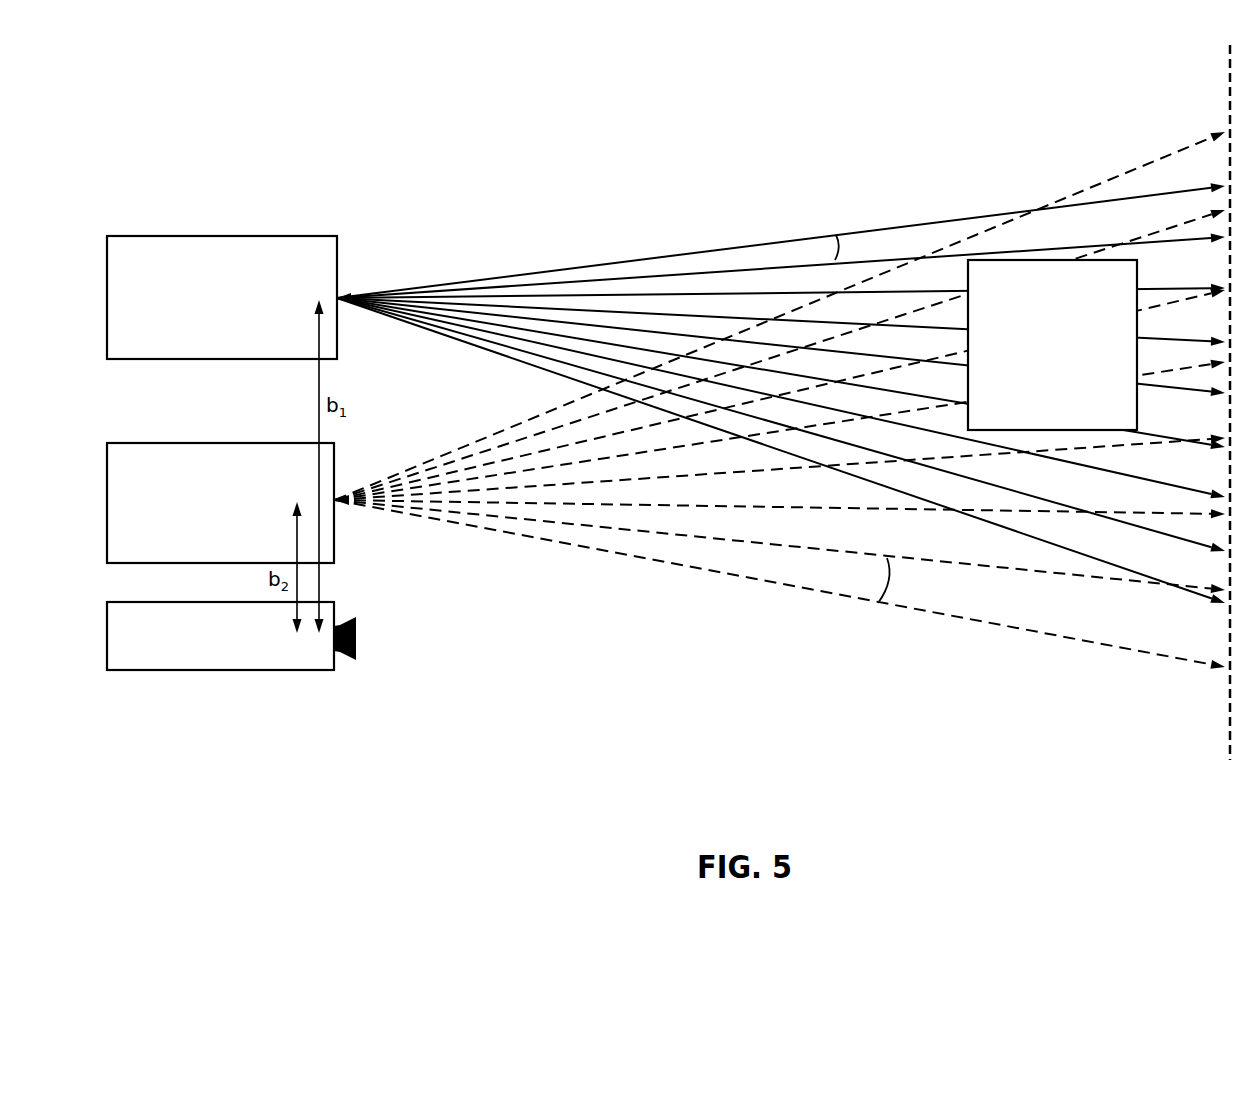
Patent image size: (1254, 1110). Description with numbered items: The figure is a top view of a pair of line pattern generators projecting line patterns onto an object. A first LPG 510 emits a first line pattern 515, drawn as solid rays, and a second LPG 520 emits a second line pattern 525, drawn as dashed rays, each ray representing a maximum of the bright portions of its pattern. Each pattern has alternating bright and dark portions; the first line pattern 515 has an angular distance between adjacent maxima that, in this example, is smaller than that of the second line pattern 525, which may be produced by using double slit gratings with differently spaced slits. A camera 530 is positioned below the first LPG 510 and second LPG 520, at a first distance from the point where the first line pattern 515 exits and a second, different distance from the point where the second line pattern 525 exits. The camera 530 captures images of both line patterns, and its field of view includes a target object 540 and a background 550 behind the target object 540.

The first LPG 510 is at (288, 313).
The first line pattern 515 is at (683, 228).
The second LPG 520 is at (240, 533).
The second line pattern 525 is at (701, 607).
The camera 530 is at (282, 650).
The target object 540 is at (1070, 373).
The background 550 is at (1214, 704).